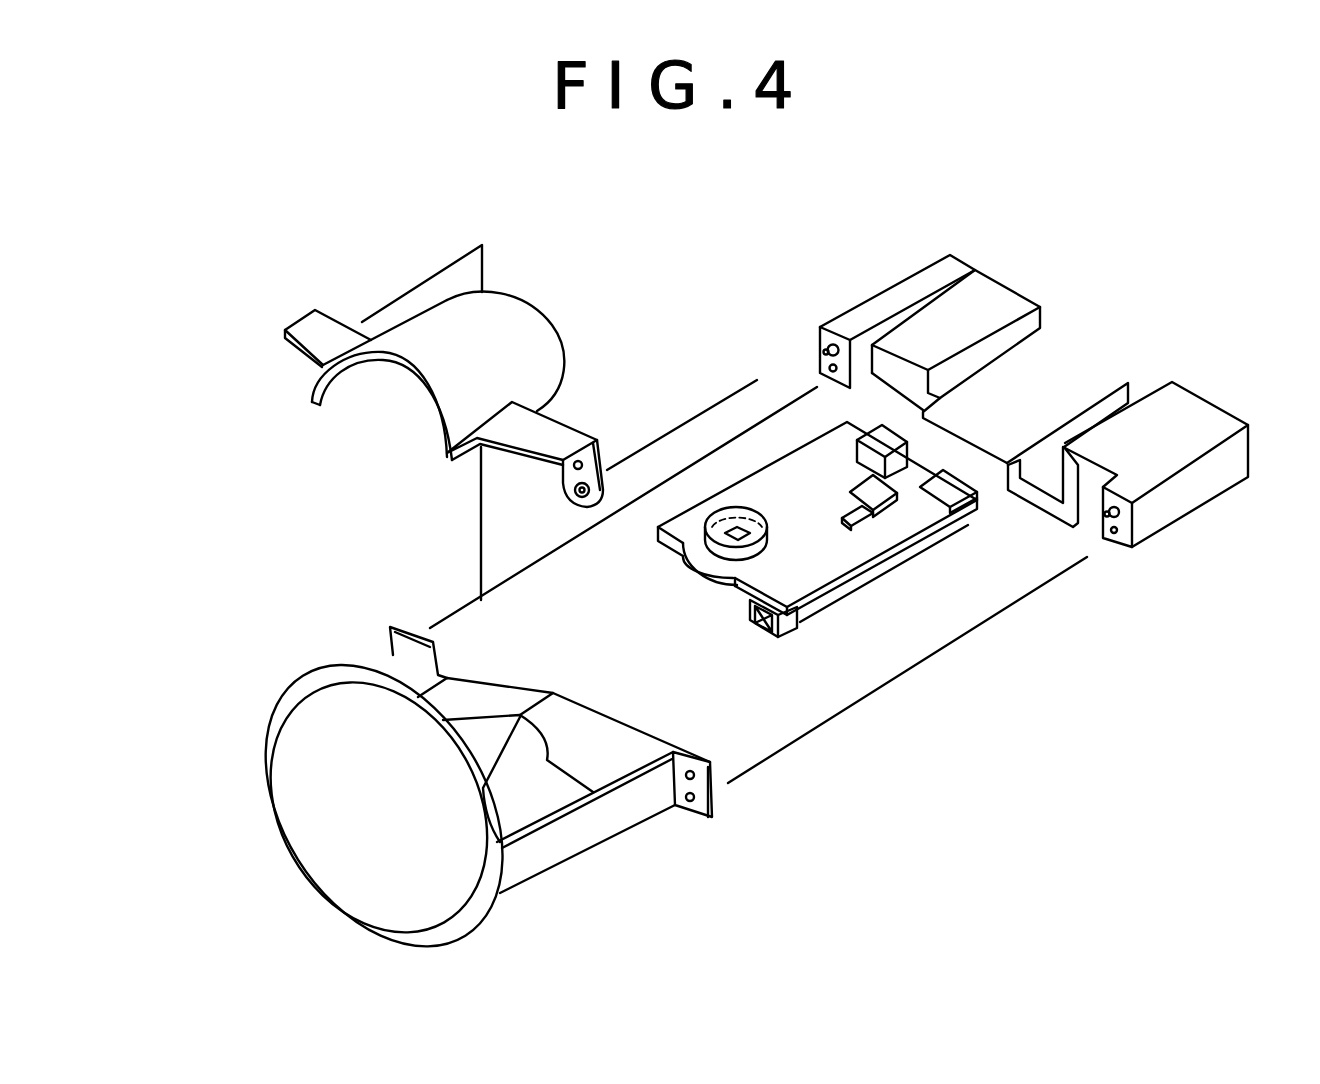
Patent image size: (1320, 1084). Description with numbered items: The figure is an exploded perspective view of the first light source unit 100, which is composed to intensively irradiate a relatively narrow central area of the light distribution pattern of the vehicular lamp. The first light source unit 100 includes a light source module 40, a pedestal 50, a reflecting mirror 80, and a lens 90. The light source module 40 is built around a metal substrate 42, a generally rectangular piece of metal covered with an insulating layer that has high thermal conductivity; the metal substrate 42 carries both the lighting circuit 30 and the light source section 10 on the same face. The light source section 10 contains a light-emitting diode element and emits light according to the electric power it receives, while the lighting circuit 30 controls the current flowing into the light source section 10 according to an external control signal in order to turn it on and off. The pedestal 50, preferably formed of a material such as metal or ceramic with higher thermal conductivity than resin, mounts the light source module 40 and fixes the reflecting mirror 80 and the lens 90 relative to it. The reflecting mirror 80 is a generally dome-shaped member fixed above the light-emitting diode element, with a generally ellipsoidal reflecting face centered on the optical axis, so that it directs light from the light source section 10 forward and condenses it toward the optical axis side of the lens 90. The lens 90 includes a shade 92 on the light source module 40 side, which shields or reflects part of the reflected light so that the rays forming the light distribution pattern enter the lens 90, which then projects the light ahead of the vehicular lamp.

The first light source unit 100 is at (135, 210).
The light source section 10 is at (777, 568).
The lighting circuit 30 is at (1012, 523).
The light source module 40 is at (1027, 614).
The metal substrate 42 is at (827, 560).
The pedestal 50 is at (1178, 423).
The reflecting mirror 80 is at (447, 322).
The lens 90 is at (322, 732).
The shade 92 is at (475, 697).